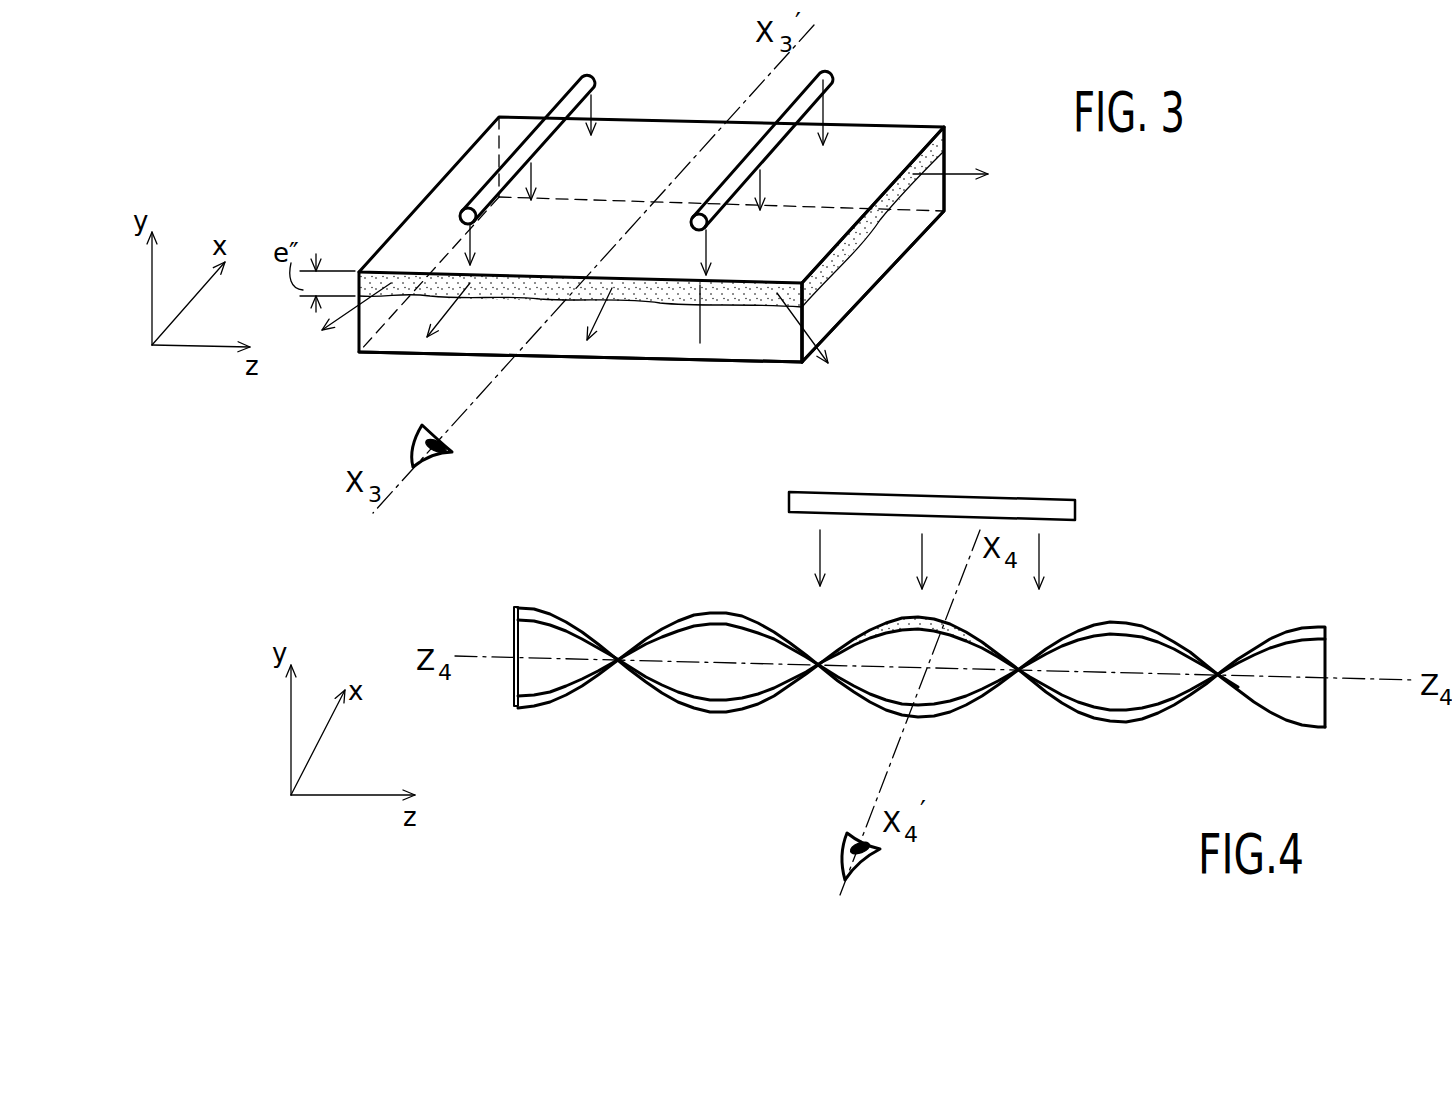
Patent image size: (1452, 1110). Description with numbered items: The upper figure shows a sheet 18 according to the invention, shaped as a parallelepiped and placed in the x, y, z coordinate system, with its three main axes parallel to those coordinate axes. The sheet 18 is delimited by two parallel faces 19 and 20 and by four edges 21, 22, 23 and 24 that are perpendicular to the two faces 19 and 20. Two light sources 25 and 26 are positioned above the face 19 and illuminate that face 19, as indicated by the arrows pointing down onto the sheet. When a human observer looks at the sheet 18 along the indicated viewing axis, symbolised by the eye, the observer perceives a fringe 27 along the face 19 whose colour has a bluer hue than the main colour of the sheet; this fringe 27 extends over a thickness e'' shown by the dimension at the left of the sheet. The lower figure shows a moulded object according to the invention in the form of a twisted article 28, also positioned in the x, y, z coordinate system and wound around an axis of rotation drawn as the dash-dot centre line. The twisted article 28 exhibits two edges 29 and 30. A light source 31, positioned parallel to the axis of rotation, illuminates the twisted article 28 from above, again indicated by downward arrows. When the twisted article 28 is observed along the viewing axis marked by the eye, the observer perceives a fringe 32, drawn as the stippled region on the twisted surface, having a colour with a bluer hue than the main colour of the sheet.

In FIG. 3, the sheet 18 is at (365, 210).
In FIG. 3, the face 19 is at (643, 153).
In FIG. 3, the face 20 is at (636, 333).
In FIG. 3, the edge 21 is at (752, 333).
In FIG. 3, the edge 22 is at (893, 239).
In FIG. 3, the edge 23 is at (862, 165).
In FIG. 3, the edge 24 is at (433, 237).
In FIG. 3, the light source 25 is at (558, 98).
In FIG. 3, the light source 26 is at (836, 87).
In FIG. 3, the fringe 27 is at (524, 295).
In FIG. 4, the twisted article 28 is at (610, 598).
In FIG. 4, the edge 29 is at (708, 612).
In FIG. 4, the edge 30 is at (800, 692).
In FIG. 4, the light source 31 is at (1040, 495).
In FIG. 4, the fringe 32 is at (900, 650).